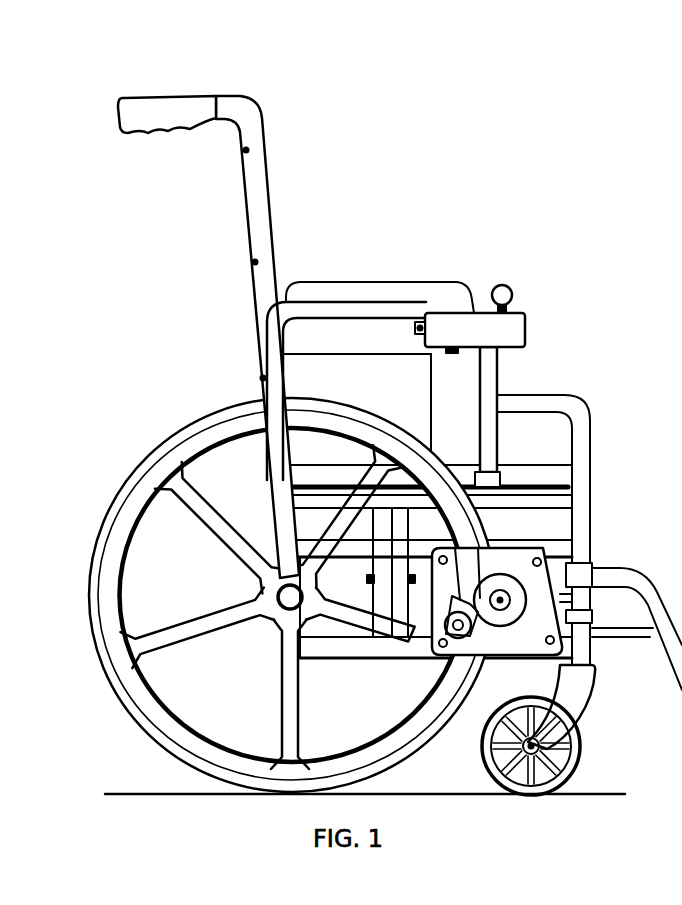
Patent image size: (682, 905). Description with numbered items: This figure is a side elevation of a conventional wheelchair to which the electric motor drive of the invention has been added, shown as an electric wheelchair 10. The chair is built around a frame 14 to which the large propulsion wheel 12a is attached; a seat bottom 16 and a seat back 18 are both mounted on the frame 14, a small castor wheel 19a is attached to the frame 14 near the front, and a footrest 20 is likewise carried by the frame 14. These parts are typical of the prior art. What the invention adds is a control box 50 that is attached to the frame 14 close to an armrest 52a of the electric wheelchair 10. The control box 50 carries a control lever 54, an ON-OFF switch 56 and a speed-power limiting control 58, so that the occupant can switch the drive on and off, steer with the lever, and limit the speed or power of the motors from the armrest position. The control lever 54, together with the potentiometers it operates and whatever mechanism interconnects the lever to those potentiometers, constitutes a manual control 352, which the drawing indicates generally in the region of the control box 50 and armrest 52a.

The electric wheelchair 10 is at (488, 161).
The large wheel 12a is at (177, 762).
The frame 14 is at (332, 665).
The seat bottom 16 is at (548, 483).
The seat back 18 is at (248, 226).
The castor wheel 19a is at (583, 763).
The footrest 20 is at (640, 524).
The control box 50 is at (546, 319).
The armrest 52a is at (308, 262).
The control lever 54 is at (512, 283).
The ON-OFF switch 56 is at (414, 327).
The speed-power limiting control 58 is at (452, 352).
The manual control 352 is at (534, 243).